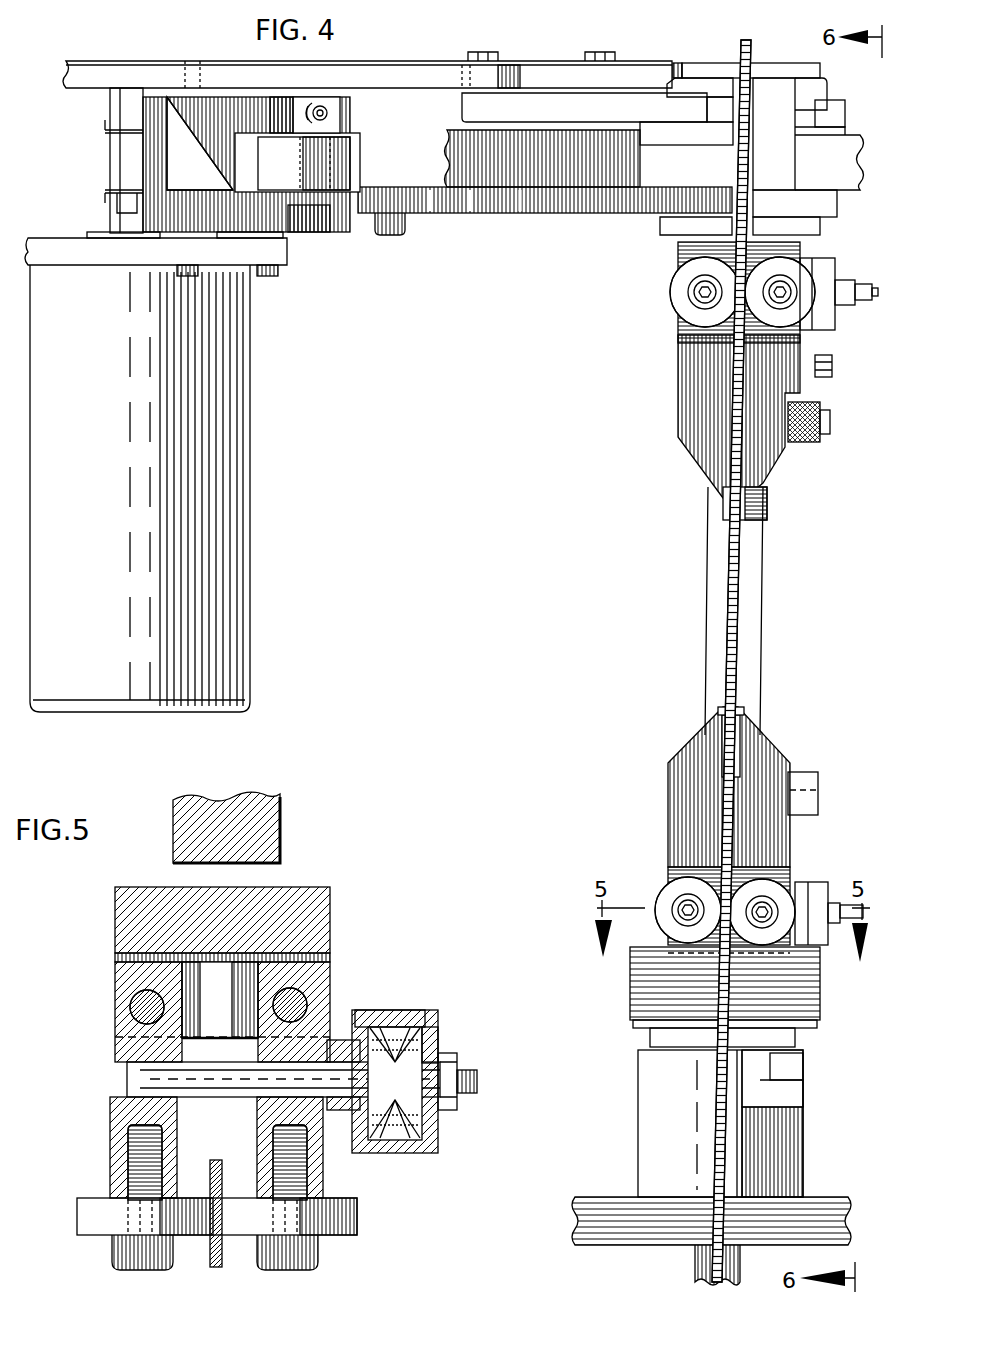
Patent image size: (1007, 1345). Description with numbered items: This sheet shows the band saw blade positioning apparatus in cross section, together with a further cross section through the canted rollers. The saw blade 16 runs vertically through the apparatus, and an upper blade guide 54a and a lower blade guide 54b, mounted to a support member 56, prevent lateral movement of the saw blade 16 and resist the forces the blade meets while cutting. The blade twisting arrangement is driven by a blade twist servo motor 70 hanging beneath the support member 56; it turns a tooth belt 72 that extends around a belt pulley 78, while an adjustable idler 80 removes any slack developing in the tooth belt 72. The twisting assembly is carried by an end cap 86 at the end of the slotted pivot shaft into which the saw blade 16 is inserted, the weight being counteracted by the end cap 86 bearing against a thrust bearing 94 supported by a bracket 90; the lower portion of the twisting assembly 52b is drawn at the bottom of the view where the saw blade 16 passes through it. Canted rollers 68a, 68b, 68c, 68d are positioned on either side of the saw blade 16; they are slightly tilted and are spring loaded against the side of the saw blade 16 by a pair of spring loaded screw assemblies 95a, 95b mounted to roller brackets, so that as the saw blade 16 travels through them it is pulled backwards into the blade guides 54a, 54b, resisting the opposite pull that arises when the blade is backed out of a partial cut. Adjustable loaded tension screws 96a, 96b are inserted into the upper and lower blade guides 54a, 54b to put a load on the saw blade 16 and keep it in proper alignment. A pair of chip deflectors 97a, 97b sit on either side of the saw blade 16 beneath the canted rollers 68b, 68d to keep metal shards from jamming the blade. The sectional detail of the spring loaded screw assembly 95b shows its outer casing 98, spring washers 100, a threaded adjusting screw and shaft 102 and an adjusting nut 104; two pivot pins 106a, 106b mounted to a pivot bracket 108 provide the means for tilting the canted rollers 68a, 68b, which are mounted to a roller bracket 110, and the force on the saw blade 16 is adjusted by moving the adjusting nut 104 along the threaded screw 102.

In FIG. 4, the saw blade 16 is at (730, 588).
In FIG. 4, the support post 52b is at (663, 1157).
In FIG. 4, the upper blade guide 54a is at (690, 433).
In FIG. 4, the lower blade guide 54b is at (675, 820).
In FIG. 4, the support member 56 is at (535, 78).
In FIG. 4, the canted roller 68a is at (677, 282).
In FIG. 5, the canted roller 68a is at (343, 1220).
In FIG. 4, the canted roller 68b is at (660, 890).
In FIG. 5, the canted roller 68b is at (87, 1208).
In FIG. 4, the canted roller 68c is at (797, 265).
In FIG. 4, the canted roller 68d is at (777, 887).
In FIG. 4, the blade twist servo motor 70 is at (230, 471).
In FIG. 4, the tooth belt 72 is at (505, 178).
In FIG. 4, the belt pulley 78 is at (108, 162).
In FIG. 4, the adjustable idler 80 is at (340, 182).
In FIG. 4, the end cap 86 is at (703, 62).
In FIG. 4, the bracket 90 is at (485, 107).
In FIG. 4, the thrust bearing 94 is at (676, 64).
In FIG. 4, the spring loaded screw assembly 95a is at (838, 317).
In FIG. 4, the spring loaded screw assembly 95b is at (822, 948).
In FIG. 5, the spring loaded screw assembly 95b is at (422, 1008).
In FIG. 4, the tension screw 96a is at (810, 440).
In FIG. 4, the tension screw 96b is at (797, 805).
In FIG. 4, the chip deflector 97a is at (632, 965).
In FIG. 4, the chip deflector 97b is at (807, 1007).
In FIG. 5, the outer casing 98 is at (400, 1006).
In FIG. 5, the spring washers 100 is at (428, 1013).
In FIG. 5, the threaded adjusting screw and shaft 102 is at (470, 1065).
In FIG. 5, the adjusting nut 104 is at (445, 1112).
In FIG. 5, the pivot pin 106a is at (330, 982).
In FIG. 5, the pivot pin 106b is at (128, 1000).
In FIG. 5, the pivot bracket 108 is at (120, 922).
In FIG. 5, the roller bracket 110 is at (322, 1157).